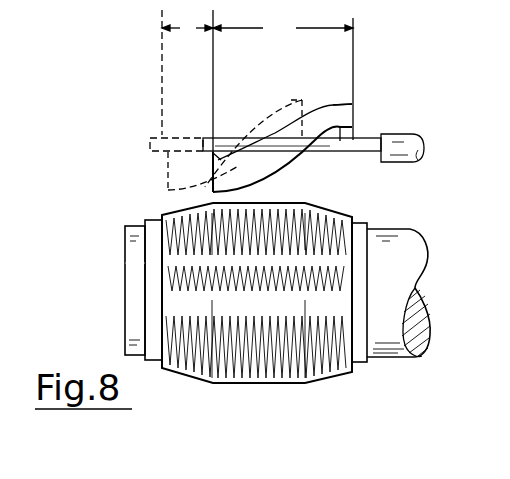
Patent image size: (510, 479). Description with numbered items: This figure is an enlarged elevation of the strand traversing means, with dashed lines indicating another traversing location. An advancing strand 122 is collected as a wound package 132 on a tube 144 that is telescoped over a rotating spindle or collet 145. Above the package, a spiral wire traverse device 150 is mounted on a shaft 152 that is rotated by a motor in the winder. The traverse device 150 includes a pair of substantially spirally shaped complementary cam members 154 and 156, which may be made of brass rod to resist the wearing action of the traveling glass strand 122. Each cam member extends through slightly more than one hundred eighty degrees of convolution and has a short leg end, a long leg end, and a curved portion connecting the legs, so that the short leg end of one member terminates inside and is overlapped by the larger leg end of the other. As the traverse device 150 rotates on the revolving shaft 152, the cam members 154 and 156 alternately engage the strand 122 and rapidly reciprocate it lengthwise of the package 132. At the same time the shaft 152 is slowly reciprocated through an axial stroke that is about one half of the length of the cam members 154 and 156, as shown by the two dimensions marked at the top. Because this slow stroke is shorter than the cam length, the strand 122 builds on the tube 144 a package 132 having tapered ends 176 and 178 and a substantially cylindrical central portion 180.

The strand 122 is at (213, 47).
The wound package 132 is at (261, 302).
The tube 144 is at (150, 220).
The collet 145 is at (130, 264).
The traverse device 150 is at (308, 92).
The shaft 152 is at (411, 135).
The cam member 154 is at (333, 105).
The cam member 156 is at (367, 137).
The tapered end 176 is at (340, 209).
The tapered end 178 is at (176, 209).
The cylindrical central portion 180 is at (292, 202).